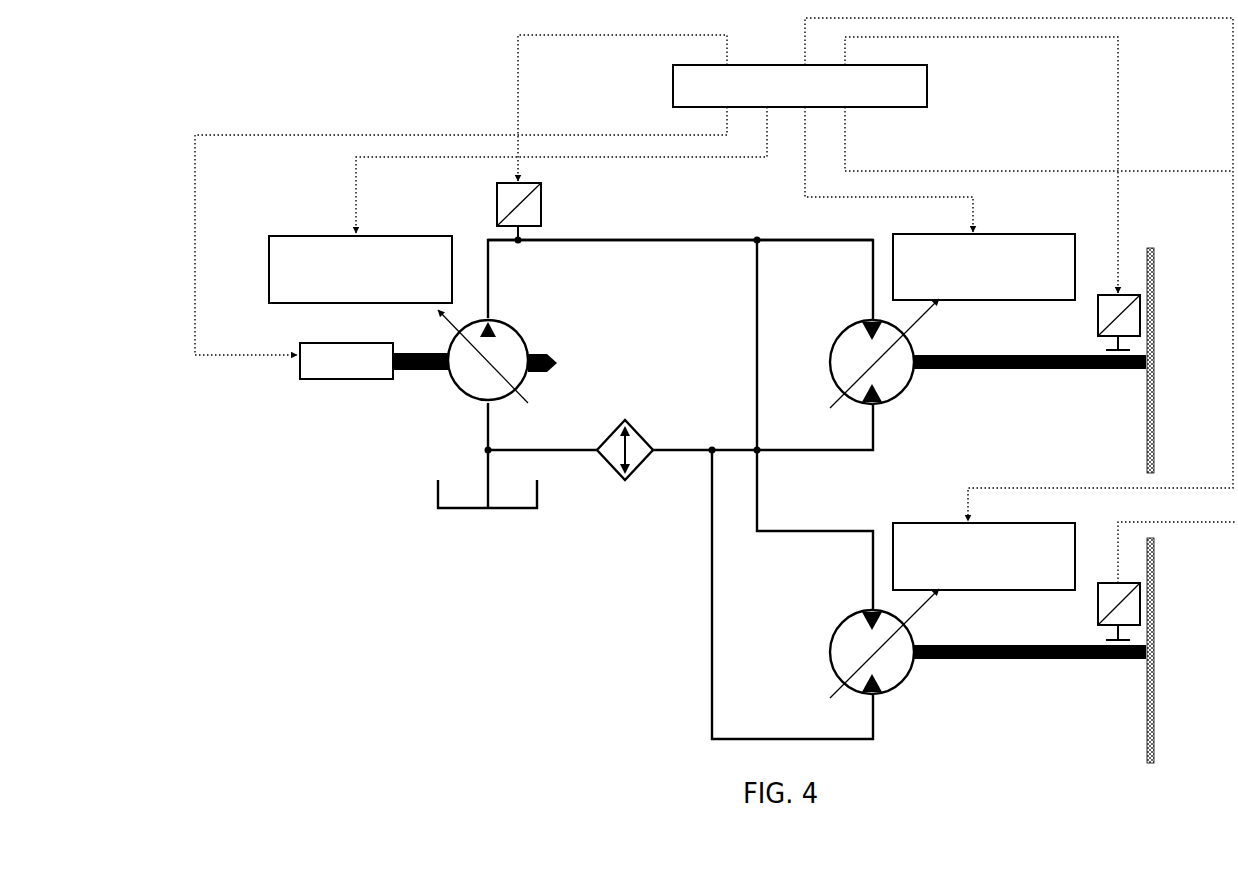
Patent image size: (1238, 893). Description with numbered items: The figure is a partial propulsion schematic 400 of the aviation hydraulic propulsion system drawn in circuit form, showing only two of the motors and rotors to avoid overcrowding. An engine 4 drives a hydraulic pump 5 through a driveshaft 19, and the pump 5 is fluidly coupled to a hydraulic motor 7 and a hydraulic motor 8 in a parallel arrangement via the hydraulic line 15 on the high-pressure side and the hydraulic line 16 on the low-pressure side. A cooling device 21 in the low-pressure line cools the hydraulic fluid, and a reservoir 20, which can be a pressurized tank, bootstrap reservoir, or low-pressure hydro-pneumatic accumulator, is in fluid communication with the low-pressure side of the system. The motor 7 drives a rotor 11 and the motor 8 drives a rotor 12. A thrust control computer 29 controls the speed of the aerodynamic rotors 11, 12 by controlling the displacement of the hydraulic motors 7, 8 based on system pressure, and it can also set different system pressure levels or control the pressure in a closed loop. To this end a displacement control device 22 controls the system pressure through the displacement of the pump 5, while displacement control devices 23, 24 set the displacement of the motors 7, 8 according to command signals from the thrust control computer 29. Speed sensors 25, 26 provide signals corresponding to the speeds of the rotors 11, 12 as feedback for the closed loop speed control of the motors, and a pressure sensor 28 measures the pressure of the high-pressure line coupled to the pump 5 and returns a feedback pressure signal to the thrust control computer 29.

The partial propulsion schematic 400 is at (124, 91).
The thrust control computer 29 is at (671, 83).
The pressure sensor 28 is at (495, 198).
The displacement control device 22 is at (266, 288).
The engine 4 is at (297, 362).
The driveshaft 19 is at (418, 349).
The hydraulic pump 5 is at (512, 321).
The hydraulic line 15 is at (607, 244).
The hydraulic line 16 is at (529, 447).
The cooling device 21 is at (610, 431).
The reservoir 20 is at (541, 506).
The hydraulic motor 7 is at (841, 331).
The displacement control device 23 is at (954, 303).
The speed sensor 25 is at (1095, 320).
The rotor 11 is at (1158, 281).
The hydraulic motor 8 is at (841, 621).
The displacement control device 24 is at (952, 593).
The speed sensor 26 is at (1095, 610).
The rotor 12 is at (1158, 570).